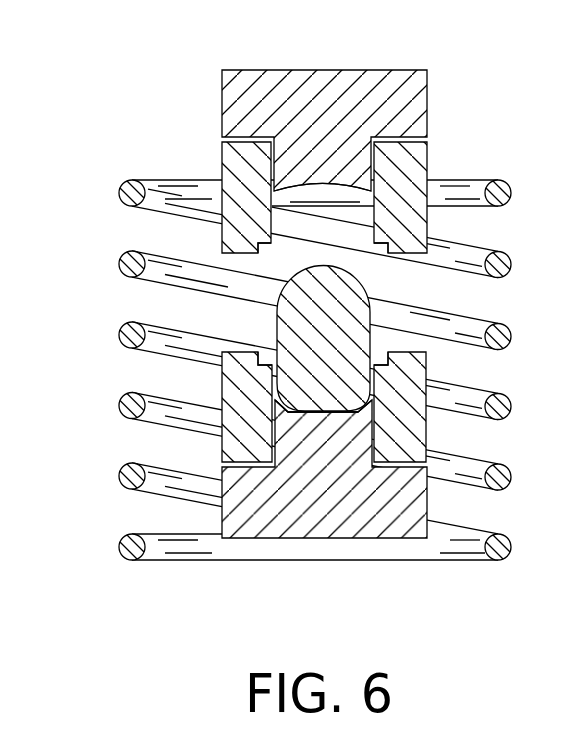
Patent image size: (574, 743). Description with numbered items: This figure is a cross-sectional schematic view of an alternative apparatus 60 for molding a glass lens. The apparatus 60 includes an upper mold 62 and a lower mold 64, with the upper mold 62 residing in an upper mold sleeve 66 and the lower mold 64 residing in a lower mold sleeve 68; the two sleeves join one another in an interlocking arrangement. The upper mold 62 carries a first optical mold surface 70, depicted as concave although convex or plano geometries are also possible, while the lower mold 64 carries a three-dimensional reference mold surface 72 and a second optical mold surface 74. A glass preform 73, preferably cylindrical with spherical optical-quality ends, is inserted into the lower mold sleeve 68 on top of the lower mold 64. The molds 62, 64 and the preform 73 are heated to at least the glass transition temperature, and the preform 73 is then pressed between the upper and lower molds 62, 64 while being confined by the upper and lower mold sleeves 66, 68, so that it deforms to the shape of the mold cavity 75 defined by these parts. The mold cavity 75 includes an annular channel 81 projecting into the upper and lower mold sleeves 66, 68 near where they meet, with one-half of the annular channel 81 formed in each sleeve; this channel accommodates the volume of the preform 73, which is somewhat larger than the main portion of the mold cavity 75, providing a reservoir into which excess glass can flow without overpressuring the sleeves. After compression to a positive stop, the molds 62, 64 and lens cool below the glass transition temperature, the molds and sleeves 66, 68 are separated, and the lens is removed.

The apparatus 60 is at (105, 311).
The upper mold 62 is at (353, 72).
The lower mold 64 is at (263, 540).
The upper mold sleeve 66 is at (427, 163).
The lower mold sleeve 68 is at (427, 432).
The first optical mold surface 70 is at (304, 186).
The three-dimensional reference mold surface 72 is at (277, 412).
The glass preform 73 is at (362, 278).
The second optical mold surface 74 is at (328, 413).
The mold cavity 75 is at (278, 398).
The annular channel 81 is at (262, 254).